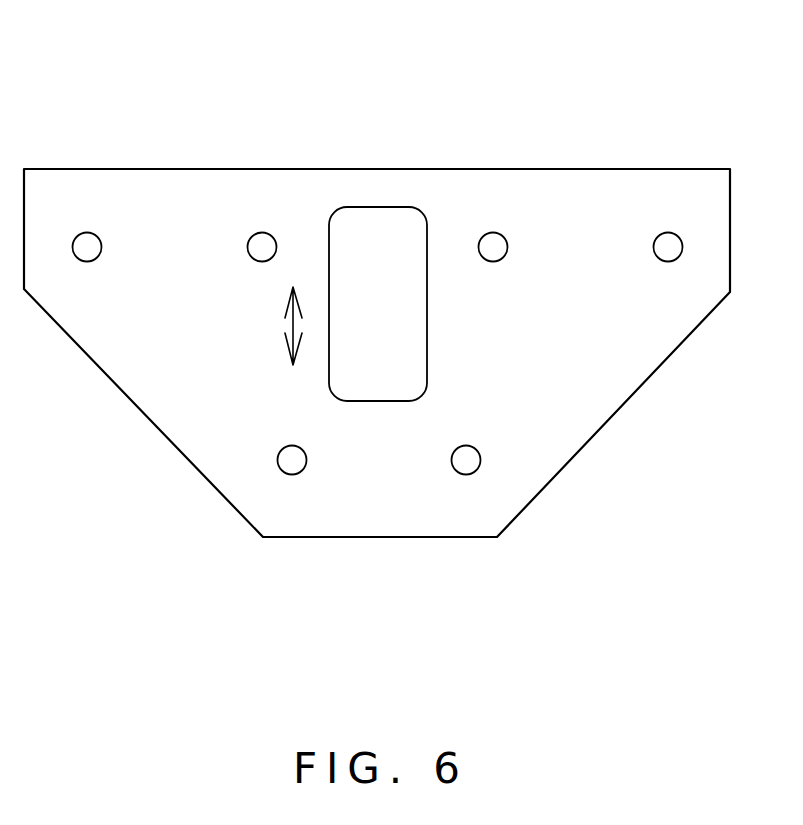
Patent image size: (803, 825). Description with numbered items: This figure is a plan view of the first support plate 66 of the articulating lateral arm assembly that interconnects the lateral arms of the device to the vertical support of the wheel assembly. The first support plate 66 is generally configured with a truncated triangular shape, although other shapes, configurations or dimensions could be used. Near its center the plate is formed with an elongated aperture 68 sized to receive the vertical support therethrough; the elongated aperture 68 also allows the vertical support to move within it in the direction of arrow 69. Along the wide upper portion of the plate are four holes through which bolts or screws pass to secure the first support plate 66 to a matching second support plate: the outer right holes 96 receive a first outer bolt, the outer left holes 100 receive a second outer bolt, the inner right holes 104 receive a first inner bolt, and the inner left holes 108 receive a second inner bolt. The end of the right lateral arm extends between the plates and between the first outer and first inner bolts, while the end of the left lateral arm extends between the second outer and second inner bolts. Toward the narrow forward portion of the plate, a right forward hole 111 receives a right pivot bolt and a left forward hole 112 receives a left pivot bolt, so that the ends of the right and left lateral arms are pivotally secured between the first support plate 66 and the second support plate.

The first support plate 66 is at (593, 357).
The elongated aperture 68 is at (378, 304).
The arrow 69 is at (288, 330).
The outer right holes 96 is at (87, 247).
The outer left holes 100 is at (668, 247).
The inner right holes 104 is at (262, 247).
The inner left holes 108 is at (493, 247).
The right forward hole 111 is at (292, 460).
The left forward hole 112 is at (466, 460).